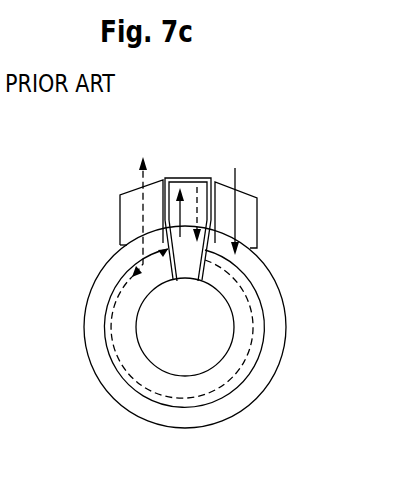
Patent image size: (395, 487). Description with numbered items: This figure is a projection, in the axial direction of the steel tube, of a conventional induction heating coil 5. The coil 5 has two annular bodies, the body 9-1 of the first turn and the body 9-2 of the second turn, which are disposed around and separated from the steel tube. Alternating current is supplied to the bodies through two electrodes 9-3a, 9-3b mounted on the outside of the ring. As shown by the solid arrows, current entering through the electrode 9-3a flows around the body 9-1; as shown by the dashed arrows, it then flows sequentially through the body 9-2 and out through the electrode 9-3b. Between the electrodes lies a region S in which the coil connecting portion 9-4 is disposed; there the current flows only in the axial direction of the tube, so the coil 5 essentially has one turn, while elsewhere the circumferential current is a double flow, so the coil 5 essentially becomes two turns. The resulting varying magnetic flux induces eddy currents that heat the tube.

The induction heating coil 5 is at (300, 279).
The body of the first turn 9-1 is at (286, 332).
The body of the second turn 9-2 is at (95, 373).
The electrode 9-3a is at (257, 214).
The electrode 9-3b is at (120, 212).
The coil connecting portion 9-4 is at (177, 178).
The region S is at (196, 174).